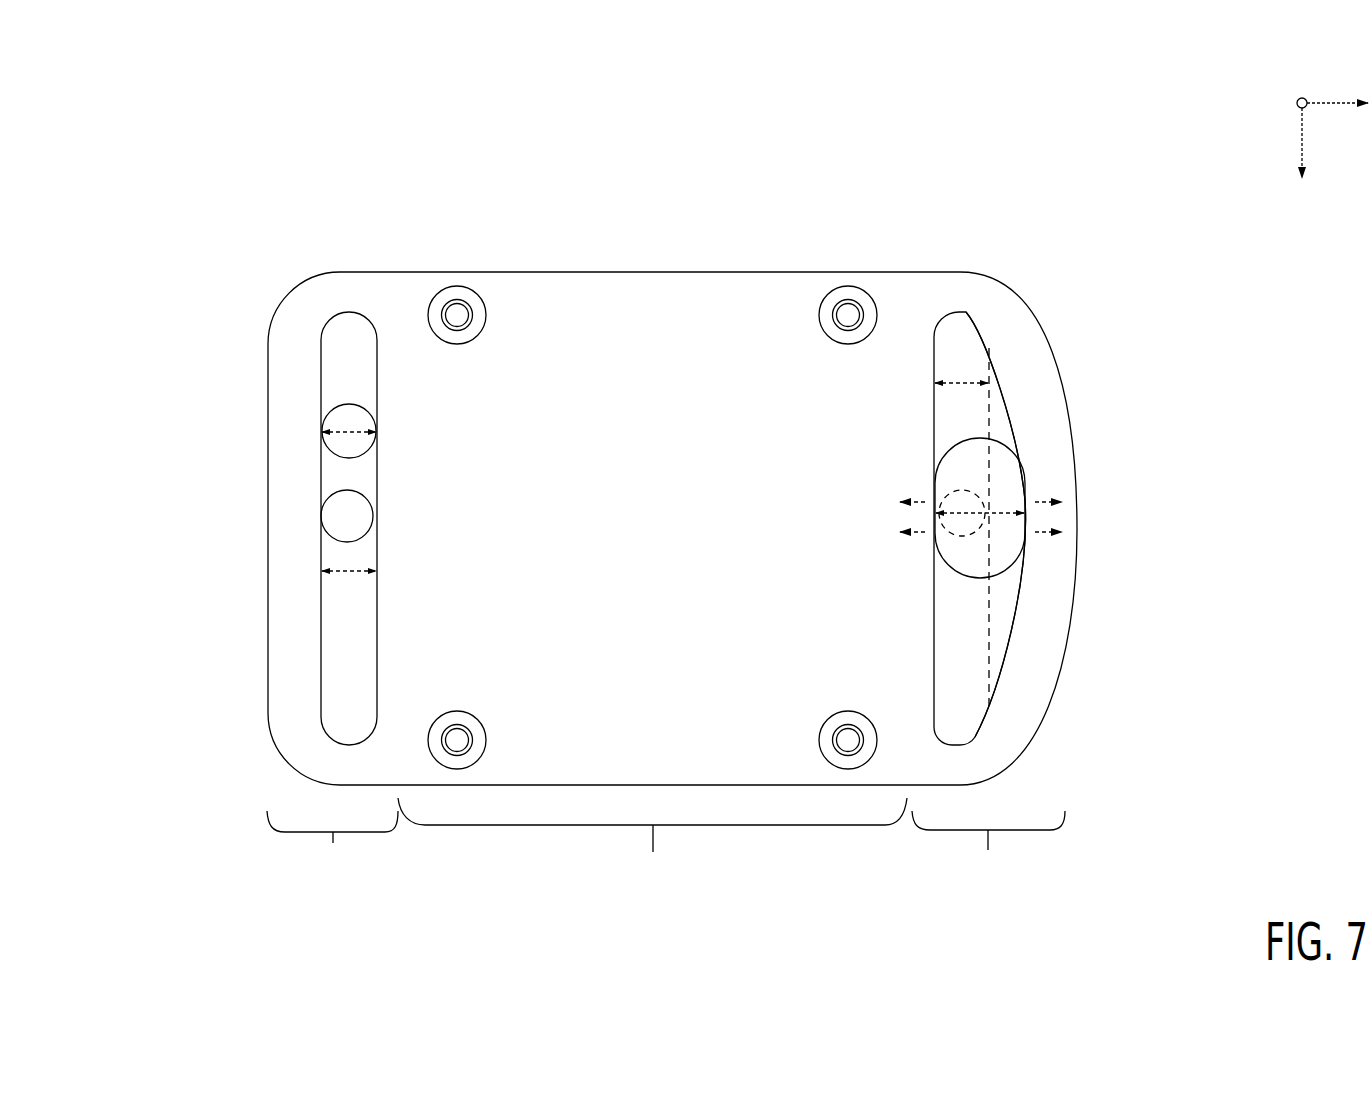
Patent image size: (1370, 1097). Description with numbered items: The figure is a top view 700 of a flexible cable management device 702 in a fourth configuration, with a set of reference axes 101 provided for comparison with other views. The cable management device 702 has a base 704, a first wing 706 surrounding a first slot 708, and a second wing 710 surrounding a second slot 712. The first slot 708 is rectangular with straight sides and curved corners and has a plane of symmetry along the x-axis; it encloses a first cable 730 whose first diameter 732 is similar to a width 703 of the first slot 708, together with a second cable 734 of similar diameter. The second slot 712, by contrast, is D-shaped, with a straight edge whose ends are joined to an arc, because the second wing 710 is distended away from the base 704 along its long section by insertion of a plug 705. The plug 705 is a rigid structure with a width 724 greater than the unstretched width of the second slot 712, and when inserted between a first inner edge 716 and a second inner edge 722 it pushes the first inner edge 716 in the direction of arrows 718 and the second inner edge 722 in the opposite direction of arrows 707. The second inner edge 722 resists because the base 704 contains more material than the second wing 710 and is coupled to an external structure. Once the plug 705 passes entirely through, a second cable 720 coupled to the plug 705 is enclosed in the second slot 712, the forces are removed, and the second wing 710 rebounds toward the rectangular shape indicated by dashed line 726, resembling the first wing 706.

The top view 700 is at (122, 128).
The cable management device 702 is at (315, 203).
The reference axes 101 is at (1277, 121).
The first slot 708 is at (323, 332).
The second slot 712 is at (977, 330).
The first cable 730 is at (370, 412).
The first diameter 732 is at (352, 435).
The second cable 734 is at (343, 490).
The width 703 is at (348, 575).
The second inner edge 722 is at (935, 470).
The plug 705 is at (1003, 442).
The width 724 is at (1000, 512).
The arrows 707 is at (905, 532).
The arrows 718 is at (1045, 538).
The second cable 720 is at (960, 540).
The dashed line 726 is at (989, 620).
The first inner edge 716 is at (1010, 670).
The first wing 706 is at (332, 848).
The base 704 is at (652, 844).
The second wing 710 is at (988, 849).